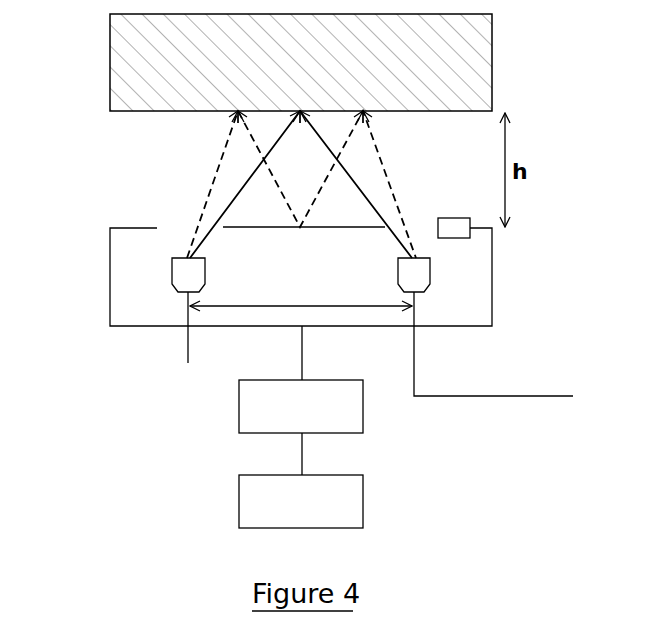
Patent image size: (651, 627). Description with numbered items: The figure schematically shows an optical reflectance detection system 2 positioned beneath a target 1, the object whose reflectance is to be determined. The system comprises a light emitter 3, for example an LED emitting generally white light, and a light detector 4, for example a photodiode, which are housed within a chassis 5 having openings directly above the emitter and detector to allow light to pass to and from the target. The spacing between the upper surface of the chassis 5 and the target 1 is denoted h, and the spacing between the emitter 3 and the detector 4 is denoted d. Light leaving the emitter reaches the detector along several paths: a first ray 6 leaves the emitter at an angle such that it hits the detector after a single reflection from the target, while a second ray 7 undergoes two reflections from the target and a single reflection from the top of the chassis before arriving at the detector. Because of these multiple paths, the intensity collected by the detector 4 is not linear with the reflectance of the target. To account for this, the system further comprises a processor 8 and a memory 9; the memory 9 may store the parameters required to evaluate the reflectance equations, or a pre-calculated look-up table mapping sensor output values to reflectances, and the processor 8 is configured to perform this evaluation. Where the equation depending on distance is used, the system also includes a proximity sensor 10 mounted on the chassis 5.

The target 1 is at (492, 62).
The optical reflection detection system 2 is at (95, 322).
The emitter 3 is at (188, 330).
The detector 4 is at (499, 334).
The chassis 5 is at (492, 277).
The first ray 6 is at (250, 176).
The second ray 7 is at (207, 198).
The processor 8 is at (350, 421).
The memory 9 is at (350, 504).
The proximity sensor 10 is at (455, 232).